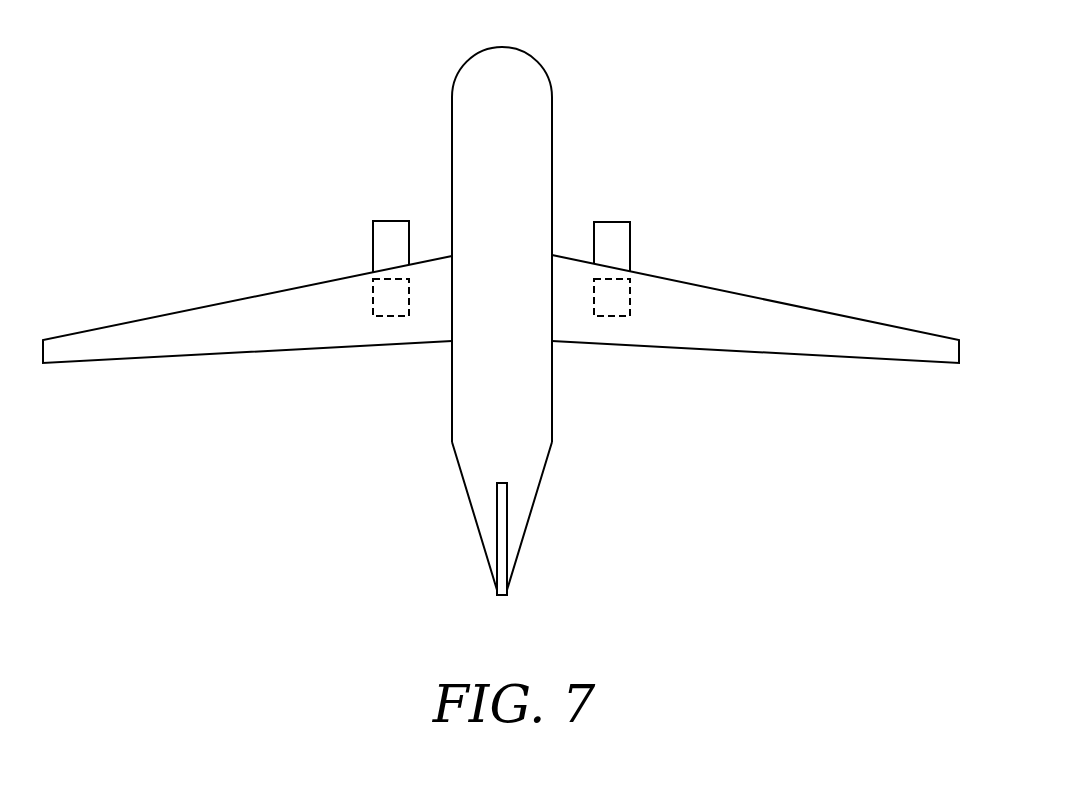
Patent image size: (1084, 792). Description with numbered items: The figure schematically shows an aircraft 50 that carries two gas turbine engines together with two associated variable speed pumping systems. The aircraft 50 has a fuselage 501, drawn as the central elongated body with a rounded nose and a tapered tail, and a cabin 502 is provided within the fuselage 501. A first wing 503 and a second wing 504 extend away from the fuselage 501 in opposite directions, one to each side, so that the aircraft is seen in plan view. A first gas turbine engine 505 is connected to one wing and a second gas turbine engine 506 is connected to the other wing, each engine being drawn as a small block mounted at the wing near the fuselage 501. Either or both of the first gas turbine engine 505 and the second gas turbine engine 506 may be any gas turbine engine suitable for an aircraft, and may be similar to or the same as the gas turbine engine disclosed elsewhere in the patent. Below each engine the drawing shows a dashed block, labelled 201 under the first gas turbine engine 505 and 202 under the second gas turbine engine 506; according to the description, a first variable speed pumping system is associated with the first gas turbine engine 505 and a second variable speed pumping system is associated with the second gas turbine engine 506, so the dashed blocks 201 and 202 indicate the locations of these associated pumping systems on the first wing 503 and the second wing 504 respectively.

The aircraft 50 is at (718, 85).
The fuselage 501 is at (482, 80).
The cabin 502 is at (467, 125).
The first wing 503 is at (115, 343).
The second wing 504 is at (888, 343).
The first gas turbine engine 505 is at (373, 247).
The second gas turbine engine 506 is at (630, 247).
The first sensor unit 201 is at (387, 316).
The second sensor unit 202 is at (617, 316).